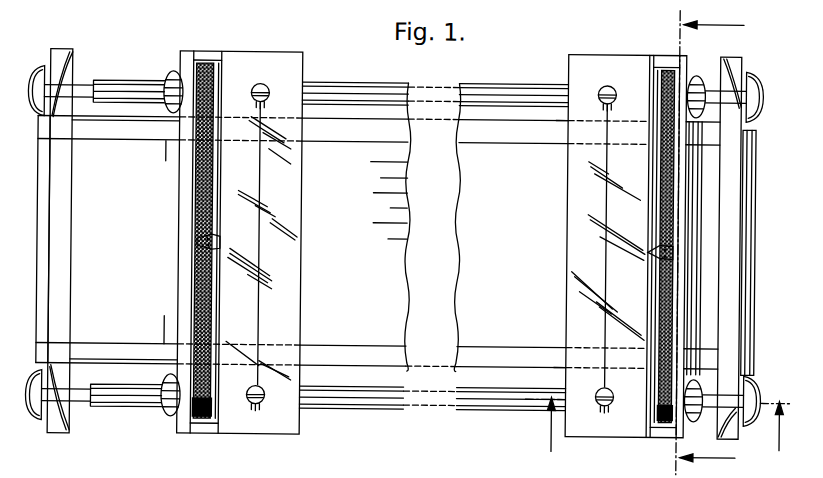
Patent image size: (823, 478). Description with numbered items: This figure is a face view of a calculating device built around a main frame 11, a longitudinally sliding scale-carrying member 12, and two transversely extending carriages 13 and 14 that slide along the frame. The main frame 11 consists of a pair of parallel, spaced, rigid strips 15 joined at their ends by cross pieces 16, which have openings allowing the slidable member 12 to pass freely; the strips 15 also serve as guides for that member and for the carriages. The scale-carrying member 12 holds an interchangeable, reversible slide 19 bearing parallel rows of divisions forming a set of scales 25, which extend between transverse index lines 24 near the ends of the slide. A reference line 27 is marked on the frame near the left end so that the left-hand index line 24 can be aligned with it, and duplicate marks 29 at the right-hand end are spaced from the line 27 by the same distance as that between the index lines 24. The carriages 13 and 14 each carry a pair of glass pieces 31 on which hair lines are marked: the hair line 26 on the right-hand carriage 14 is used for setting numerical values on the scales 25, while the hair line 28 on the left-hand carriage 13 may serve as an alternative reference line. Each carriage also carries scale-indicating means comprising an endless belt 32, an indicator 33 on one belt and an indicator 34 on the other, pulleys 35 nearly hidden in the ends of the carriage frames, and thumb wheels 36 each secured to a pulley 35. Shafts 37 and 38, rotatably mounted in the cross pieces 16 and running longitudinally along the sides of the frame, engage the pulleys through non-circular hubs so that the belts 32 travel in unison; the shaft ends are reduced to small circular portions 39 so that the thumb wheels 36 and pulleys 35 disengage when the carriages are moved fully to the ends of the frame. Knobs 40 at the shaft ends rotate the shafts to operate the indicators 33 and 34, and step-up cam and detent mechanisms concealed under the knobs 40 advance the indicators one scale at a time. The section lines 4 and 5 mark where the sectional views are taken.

The section line 4— 4 is at (702, 243).
The section line 5— 5 is at (658, 431).
The main frame 11 is at (34, 158).
The sliding scale-carrying member 12 is at (42, 233).
The left-hand carriage 13 is at (252, 62).
The right-hand carriage 14 is at (615, 62).
The longitudinal strips 15 is at (509, 126).
The cross pieces 16 is at (733, 186).
The scale-carrying slide 19 is at (466, 260).
The transverse index lines 24 is at (166, 157).
The scales 25 is at (381, 164).
The hair line 26 is at (606, 190).
The reference line 27 is at (166, 121).
The hair line 28 is at (260, 188).
The reference marks 29 is at (568, 120).
The glass pieces 31 is at (293, 249).
The endless belts 32 is at (196, 278).
The indicator 33 is at (216, 240).
The indicator 34 is at (657, 246).
The pulleys 35 is at (214, 406).
The thumb wheels 36 is at (167, 77).
The shaft 37 is at (355, 84).
The shaft 38 is at (350, 402).
The small cross-section shaft portions 39 is at (86, 87).
The knobs 40 is at (32, 83).